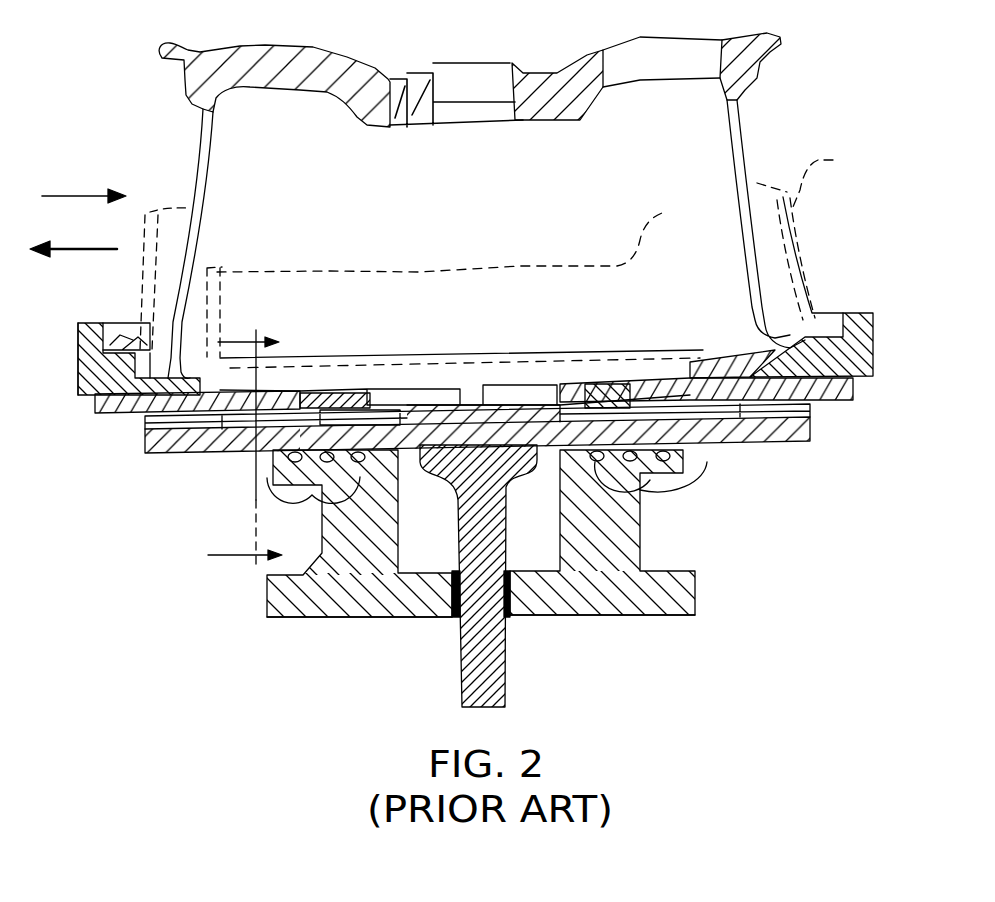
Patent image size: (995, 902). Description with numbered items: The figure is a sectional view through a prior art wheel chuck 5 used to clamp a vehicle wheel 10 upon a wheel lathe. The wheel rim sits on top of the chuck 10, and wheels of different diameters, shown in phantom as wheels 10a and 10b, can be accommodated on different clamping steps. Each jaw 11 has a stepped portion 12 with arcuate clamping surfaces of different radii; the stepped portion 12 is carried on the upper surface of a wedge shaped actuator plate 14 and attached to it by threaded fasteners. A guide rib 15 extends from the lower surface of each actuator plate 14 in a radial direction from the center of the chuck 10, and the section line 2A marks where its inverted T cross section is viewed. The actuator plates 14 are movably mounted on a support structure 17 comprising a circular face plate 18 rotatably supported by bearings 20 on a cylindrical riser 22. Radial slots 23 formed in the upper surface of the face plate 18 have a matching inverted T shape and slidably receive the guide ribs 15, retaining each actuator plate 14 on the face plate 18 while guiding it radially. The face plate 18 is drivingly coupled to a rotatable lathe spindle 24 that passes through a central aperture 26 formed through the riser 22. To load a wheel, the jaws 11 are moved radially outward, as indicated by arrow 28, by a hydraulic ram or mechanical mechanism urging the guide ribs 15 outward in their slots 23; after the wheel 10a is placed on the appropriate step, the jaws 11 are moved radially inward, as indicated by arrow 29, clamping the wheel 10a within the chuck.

The wheel chuck 5 is at (122, 163).
The vehicle wheel 10 is at (570, 70).
The vehicle wheel 10a is at (431, 276).
The vehicle wheel 10b is at (816, 231).
The jaw 11 is at (70, 374).
The stepped portion 12 is at (90, 320).
The wedge shaped actuator plate 14 is at (100, 407).
The guide rib 15 is at (232, 447).
The support structure 17 is at (738, 496).
The circular face plate 18 is at (812, 428).
The bearings 20 is at (258, 495).
The cylindrical riser 22 is at (642, 520).
The radial slot 23 is at (372, 415).
The rotatable lathe spindle 24 is at (508, 658).
The central aperture 26 is at (453, 620).
The arrow 28 is at (73, 238).
The arrow 29 is at (84, 185).
The section line 2A is at (245, 458).